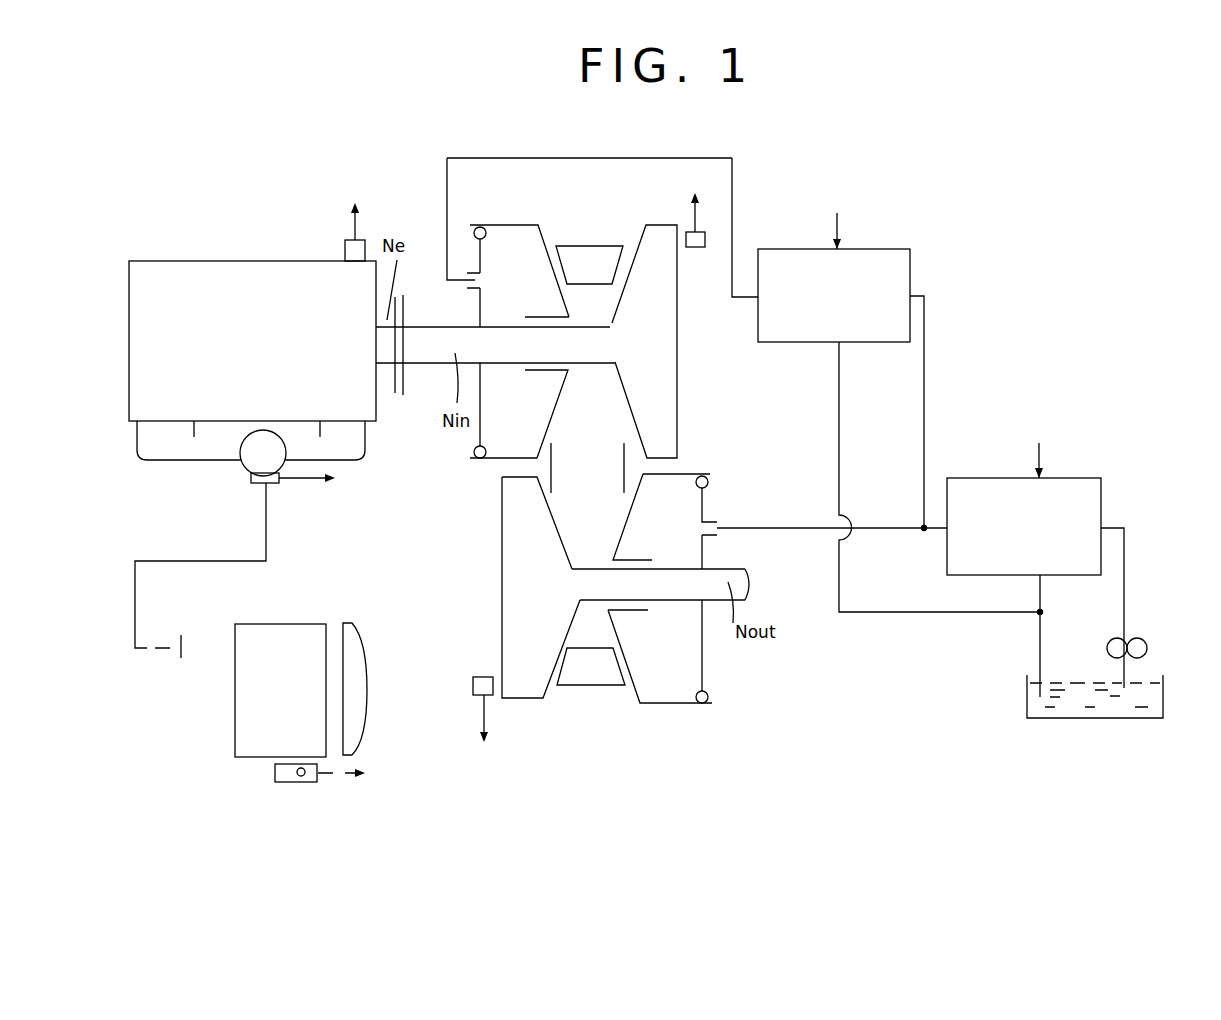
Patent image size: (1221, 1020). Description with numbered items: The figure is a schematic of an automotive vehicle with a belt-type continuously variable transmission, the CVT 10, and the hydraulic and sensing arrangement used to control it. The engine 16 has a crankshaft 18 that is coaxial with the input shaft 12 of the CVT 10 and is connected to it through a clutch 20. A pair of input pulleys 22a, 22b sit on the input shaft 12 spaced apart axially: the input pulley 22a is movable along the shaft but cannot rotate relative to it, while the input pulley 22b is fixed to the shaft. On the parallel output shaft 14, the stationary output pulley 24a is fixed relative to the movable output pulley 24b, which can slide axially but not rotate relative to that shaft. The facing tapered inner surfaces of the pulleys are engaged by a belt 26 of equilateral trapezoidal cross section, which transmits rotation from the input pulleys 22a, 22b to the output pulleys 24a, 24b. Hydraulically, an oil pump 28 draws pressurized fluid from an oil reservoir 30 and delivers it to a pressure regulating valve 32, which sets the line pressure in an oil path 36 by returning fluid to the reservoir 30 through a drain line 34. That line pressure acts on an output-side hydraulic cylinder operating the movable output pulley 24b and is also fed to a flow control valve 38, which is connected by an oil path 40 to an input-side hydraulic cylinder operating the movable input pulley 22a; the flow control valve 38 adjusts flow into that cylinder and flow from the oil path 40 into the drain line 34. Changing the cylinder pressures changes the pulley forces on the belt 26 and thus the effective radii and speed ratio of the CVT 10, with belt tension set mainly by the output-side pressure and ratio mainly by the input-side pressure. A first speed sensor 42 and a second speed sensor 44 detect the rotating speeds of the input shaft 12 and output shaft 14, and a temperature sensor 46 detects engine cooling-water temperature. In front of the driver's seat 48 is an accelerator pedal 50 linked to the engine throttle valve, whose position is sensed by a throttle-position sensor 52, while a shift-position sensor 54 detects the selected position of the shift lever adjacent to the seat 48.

The CVT 10 is at (632, 187).
The input shaft 12 is at (429, 338).
The output shaft 14 is at (715, 587).
The engine 16 is at (219, 283).
The crankshaft 18 is at (387, 353).
The clutch 20 is at (403, 325).
The input pulley 22a is at (510, 246).
The input pulley 22b is at (657, 423).
The output pulley 24a is at (528, 677).
The output pulley 24b is at (675, 683).
The belt 26 is at (589, 260).
The oil pump 28 is at (1147, 648).
The oil reservoir 30 is at (1163, 697).
The pressure regulating valve 32 is at (1070, 476).
The drain line 34 is at (1040, 647).
The oil path 36 is at (924, 443).
The flow control valve 38 is at (913, 275).
The oil path 40 is at (733, 197).
The first speed sensor 42 is at (697, 250).
The second speed sensor 44 is at (472, 685).
The temperature sensor 46 is at (343, 243).
The driver's seat 48 is at (284, 647).
The accelerator pedal 50 is at (187, 647).
The throttle-position sensor 52 is at (243, 465).
The shift-position sensor 54 is at (270, 770).